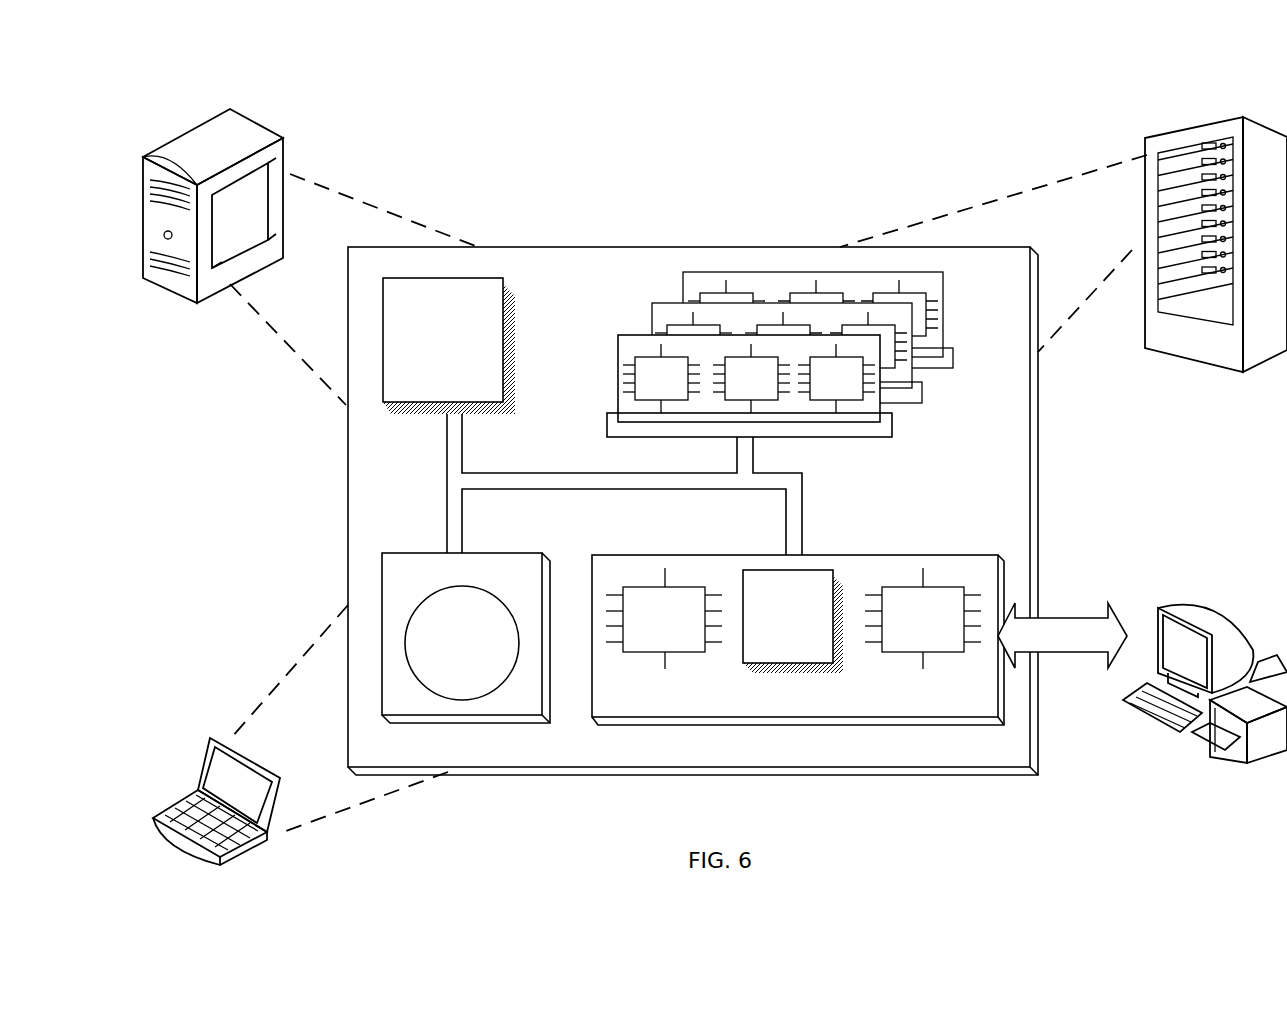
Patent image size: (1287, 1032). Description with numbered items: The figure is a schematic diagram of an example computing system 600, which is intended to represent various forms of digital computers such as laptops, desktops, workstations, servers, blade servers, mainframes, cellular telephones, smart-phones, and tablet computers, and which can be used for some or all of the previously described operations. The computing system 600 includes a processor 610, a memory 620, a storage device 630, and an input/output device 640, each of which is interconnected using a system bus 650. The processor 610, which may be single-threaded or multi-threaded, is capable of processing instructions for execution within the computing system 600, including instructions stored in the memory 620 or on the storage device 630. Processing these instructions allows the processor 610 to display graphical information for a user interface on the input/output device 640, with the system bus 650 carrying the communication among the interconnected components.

The computing system 600 is at (145, 83).
The processor 610 is at (449, 346).
The memory 620 is at (950, 406).
The storage device 630 is at (466, 638).
The input/output device 640 is at (1160, 608).
The system bus 650 is at (618, 489).